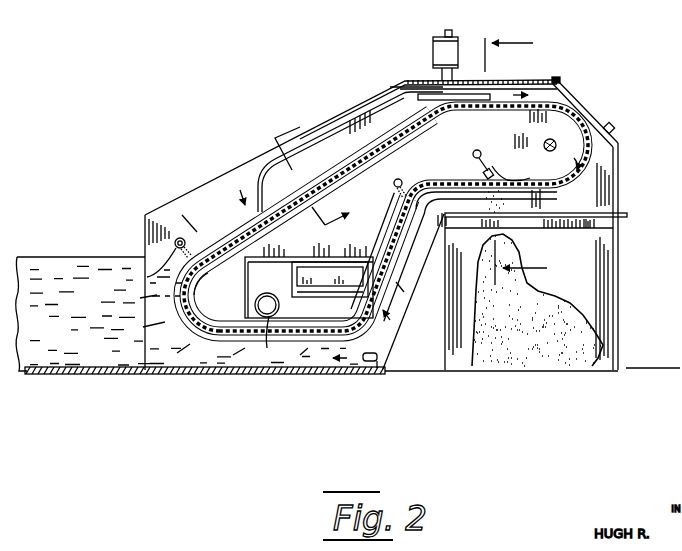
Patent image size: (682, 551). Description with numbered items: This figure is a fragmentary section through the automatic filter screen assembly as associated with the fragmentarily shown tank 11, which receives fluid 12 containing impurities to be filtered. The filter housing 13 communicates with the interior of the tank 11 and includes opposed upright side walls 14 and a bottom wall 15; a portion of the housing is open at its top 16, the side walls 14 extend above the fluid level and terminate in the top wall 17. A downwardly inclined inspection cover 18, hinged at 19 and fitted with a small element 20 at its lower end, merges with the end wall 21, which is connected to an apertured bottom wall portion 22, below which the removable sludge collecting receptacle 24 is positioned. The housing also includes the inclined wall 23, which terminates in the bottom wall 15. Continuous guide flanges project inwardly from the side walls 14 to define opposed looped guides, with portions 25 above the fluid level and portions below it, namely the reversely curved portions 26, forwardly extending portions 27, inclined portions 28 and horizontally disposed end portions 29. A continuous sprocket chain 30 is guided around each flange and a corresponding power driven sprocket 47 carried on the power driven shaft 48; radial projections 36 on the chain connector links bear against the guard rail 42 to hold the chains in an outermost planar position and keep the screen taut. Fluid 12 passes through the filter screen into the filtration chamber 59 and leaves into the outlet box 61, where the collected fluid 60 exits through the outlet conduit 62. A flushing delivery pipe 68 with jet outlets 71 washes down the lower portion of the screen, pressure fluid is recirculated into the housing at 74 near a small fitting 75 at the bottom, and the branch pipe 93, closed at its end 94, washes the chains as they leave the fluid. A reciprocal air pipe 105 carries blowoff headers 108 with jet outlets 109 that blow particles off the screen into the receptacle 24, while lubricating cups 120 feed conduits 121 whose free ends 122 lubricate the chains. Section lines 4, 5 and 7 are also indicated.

The section line 4- 4 is at (522, 158).
The section line 5- 5 is at (213, 202).
The section line 7- 7 is at (319, 163).
The tank 11 is at (70, 257).
The fluid 12 is at (97, 268).
The filter housing 13 is at (212, 175).
The side walls 14 is at (168, 210).
The bottom wall 15 is at (183, 375).
The open top 16 is at (257, 168).
The top wall 17 is at (521, 80).
The inspection cover 18 is at (600, 118).
The hinge 19 is at (562, 78).
The latch 20 is at (614, 128).
The end wall 21 is at (619, 193).
The apertured bottom wall portion 22 is at (566, 213).
The inclined wall 23 is at (392, 350).
The sludge collecting receptacle 24 is at (517, 371).
The guide flange portions 25 is at (421, 122).
The reversely curved portions 26 is at (200, 301).
The forwardly extending portions 27 is at (316, 300).
The inclined portions 28 is at (397, 214).
The horizontally disposed end portions 29 is at (472, 156).
The sprocket chain 30 is at (456, 104).
The radial projections 36 is at (598, 158).
The guard rail 42 is at (344, 157).
The power driven sprockets 47 is at (521, 134).
The power driven shaft 48 is at (556, 145).
The filtration chamber 59 is at (295, 287).
The collected fluid 60 is at (267, 293).
The outlet box 61 is at (302, 257).
The outlet conduit 62 is at (265, 339).
The delivery pipe 68 is at (397, 178).
The jet outlets 71 is at (414, 186).
The recirculation inlet 74 is at (377, 369).
The outlet 75 is at (364, 361).
The branch fluid pipe 93 is at (146, 270).
The closed outer end 94 is at (146, 284).
The reciprocal air pipe 105 is at (477, 149).
The blowoff headers 108 is at (491, 163).
The jet outlets 109 is at (517, 176).
The lubricating cups 120 is at (460, 48).
The conduits 121 is at (380, 109).
The free ends 122 is at (266, 200).